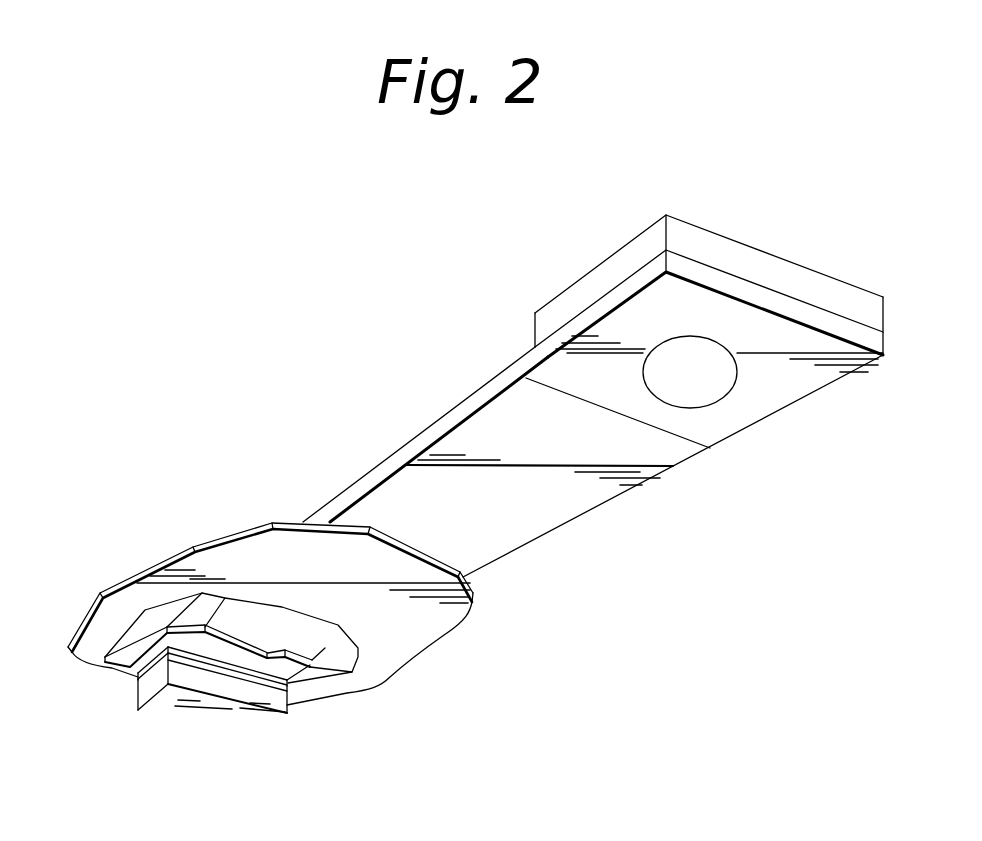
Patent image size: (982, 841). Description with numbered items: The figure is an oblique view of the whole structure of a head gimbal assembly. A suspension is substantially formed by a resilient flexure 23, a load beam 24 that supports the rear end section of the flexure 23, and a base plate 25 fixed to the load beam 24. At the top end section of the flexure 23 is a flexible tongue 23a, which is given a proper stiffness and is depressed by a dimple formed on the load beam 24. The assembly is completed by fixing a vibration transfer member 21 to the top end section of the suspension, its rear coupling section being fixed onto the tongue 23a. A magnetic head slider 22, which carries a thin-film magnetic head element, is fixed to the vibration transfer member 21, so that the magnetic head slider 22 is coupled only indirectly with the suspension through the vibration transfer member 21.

The vibration transfer member 21 is at (137, 673).
The magnetic head slider 22 is at (208, 718).
The flexure 23 is at (268, 540).
The tongue 23a is at (311, 658).
The load beam 24 is at (473, 437).
The base plate 25 is at (590, 285).